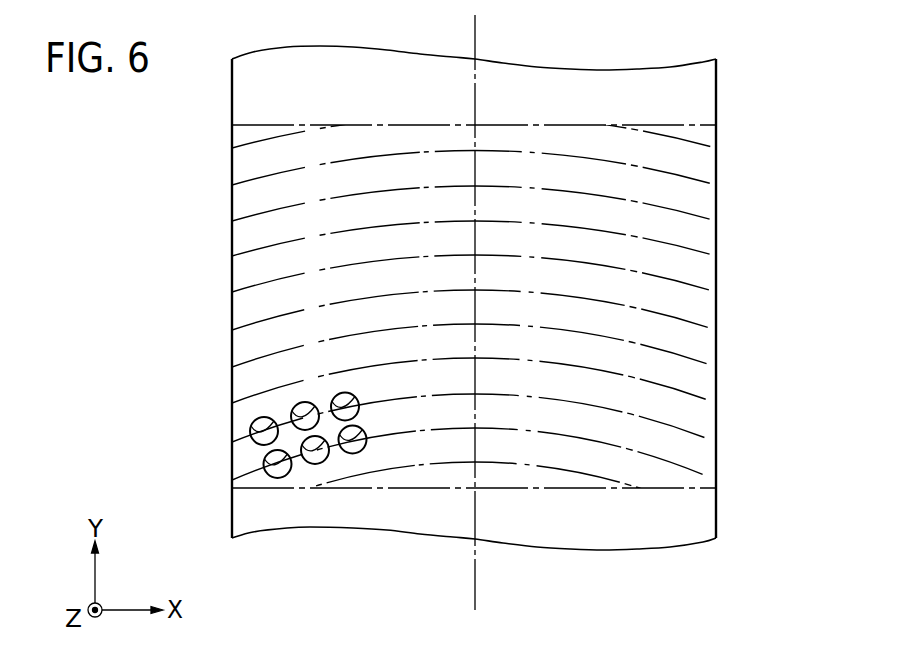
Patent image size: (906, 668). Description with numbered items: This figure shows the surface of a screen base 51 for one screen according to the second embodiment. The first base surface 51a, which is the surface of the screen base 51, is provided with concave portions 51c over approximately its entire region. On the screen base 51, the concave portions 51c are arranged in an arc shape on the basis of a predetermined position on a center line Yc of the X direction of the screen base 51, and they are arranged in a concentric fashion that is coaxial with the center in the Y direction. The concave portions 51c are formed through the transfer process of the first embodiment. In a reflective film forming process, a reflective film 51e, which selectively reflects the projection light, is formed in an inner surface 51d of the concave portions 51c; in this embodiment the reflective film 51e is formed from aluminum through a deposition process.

The screen base 51 is at (716, 79).
The first base surface 51a is at (705, 115).
The concave portions 51c is at (237, 459).
The inner surface 51d is at (263, 476).
The reflective film 51e is at (254, 430).
The center line Yc is at (475, 592).